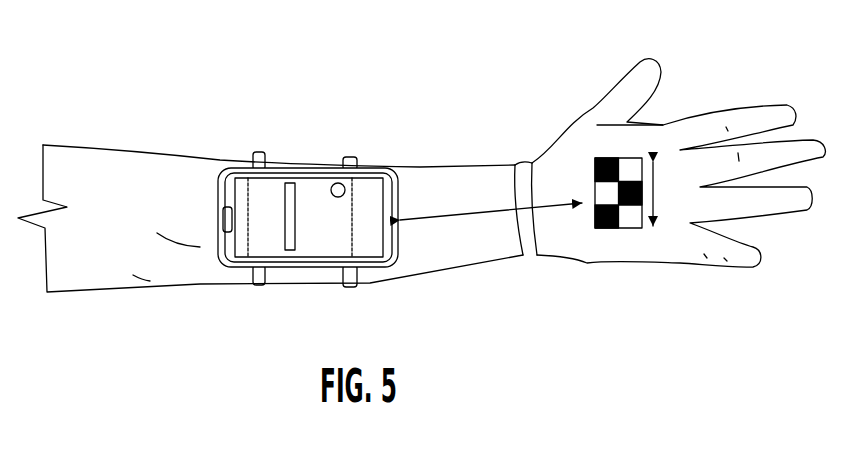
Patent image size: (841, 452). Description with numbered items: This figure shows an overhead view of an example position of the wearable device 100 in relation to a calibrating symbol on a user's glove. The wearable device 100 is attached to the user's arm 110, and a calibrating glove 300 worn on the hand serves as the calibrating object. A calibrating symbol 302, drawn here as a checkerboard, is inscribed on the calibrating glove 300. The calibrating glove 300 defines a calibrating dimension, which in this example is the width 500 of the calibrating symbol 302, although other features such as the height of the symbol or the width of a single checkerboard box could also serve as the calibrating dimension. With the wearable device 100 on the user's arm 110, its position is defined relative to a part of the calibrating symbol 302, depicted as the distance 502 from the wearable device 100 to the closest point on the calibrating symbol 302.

The wearable device 100 is at (272, 195).
The user's arm 110 is at (150, 255).
The calibrating glove 300 is at (668, 125).
The calibrating symbol 302 is at (605, 150).
The width of the calibrating symbol 500 is at (656, 202).
The distance 502 is at (483, 207).